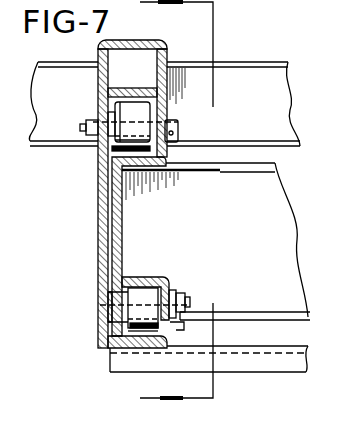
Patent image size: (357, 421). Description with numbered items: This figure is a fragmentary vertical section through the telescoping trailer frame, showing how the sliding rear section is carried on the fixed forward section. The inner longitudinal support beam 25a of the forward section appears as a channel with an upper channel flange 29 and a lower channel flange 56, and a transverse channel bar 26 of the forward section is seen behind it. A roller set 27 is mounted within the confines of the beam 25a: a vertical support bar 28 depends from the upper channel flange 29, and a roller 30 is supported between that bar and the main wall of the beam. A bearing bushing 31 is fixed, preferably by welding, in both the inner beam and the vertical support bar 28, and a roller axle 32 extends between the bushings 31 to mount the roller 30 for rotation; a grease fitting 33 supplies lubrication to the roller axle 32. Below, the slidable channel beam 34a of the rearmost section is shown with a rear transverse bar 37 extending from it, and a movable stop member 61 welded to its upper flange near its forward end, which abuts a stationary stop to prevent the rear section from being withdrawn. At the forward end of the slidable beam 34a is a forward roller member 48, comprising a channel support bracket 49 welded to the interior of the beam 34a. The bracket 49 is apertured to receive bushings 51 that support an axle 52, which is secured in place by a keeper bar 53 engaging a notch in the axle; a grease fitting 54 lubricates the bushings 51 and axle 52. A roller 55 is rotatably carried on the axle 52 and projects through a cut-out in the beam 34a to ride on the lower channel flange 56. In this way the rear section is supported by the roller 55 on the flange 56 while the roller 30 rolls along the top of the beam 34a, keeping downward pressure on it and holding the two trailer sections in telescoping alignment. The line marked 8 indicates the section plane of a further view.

The section line 8- 8 is at (160, 205).
The inner longitudinal support beam 25a is at (100, 213).
The transverse channel bar 26 is at (282, 108).
The roller set 27 is at (173, 110).
The vertical support bar 28 is at (168, 56).
The upper channel flange 29 is at (137, 40).
The roller 30 is at (112, 109).
The bearing bushing 31 is at (180, 125).
The roller axle 32 is at (98, 148).
The grease fitting 33 is at (80, 128).
The slidable channel beam 34a is at (120, 225).
The rear transverse bar 37 is at (290, 262).
The forward roller member 48 is at (176, 278).
The channel support bracket 49 is at (130, 278).
The bushing 51 is at (112, 327).
The axle 52 is at (108, 306).
The keeper bar 53 is at (186, 300).
The grease fitting 54 is at (196, 318).
The roller 55 is at (108, 292).
The lower channel flange 56 is at (104, 344).
The movable stop member 61 is at (200, 170).